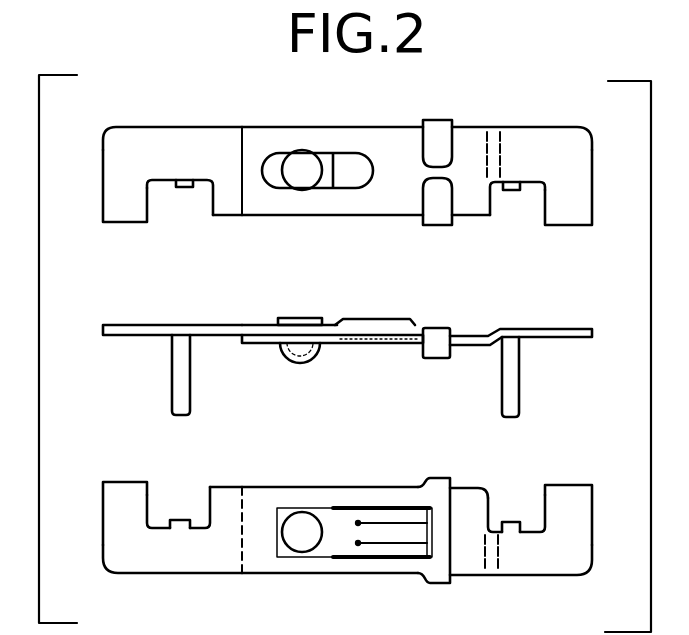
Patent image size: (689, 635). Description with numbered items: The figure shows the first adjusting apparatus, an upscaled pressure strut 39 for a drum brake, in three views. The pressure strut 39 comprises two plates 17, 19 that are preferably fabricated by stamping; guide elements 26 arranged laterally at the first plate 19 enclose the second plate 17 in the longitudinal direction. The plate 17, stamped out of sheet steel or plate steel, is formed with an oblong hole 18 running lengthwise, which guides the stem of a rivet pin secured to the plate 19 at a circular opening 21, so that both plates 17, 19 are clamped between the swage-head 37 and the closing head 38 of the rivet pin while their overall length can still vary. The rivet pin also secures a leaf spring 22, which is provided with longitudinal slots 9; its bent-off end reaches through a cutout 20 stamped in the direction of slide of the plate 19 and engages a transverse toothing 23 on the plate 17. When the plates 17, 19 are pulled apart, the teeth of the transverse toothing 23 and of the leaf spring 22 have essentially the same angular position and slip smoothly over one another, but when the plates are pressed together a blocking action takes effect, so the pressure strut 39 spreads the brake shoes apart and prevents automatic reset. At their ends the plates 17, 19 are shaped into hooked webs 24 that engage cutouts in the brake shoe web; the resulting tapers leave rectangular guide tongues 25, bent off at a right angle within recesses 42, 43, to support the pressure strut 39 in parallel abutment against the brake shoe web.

The longitudinal slots 9 is at (372, 527).
The second plate 17 is at (537, 142).
The oblong hole 18 is at (354, 152).
The first plate 19 is at (151, 131).
The cutout 20 is at (375, 507).
The circular hole 21 is at (302, 165).
The leaf spring 22 is at (400, 324).
The transverse toothing 23 is at (382, 346).
The hooked webs 24 is at (112, 210).
The guide tongues 25 is at (184, 189).
The guide elements 26 is at (435, 192).
The swage-head 37 is at (290, 320).
The closing head 38 is at (295, 357).
The pressure strut 39 is at (240, 117).
The recess 42 is at (163, 190).
The recess 43 is at (529, 195).